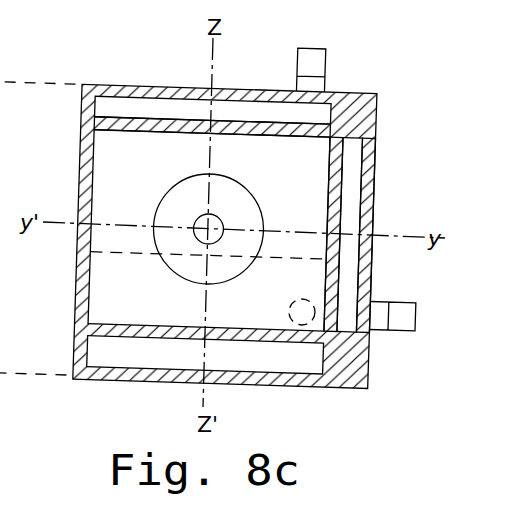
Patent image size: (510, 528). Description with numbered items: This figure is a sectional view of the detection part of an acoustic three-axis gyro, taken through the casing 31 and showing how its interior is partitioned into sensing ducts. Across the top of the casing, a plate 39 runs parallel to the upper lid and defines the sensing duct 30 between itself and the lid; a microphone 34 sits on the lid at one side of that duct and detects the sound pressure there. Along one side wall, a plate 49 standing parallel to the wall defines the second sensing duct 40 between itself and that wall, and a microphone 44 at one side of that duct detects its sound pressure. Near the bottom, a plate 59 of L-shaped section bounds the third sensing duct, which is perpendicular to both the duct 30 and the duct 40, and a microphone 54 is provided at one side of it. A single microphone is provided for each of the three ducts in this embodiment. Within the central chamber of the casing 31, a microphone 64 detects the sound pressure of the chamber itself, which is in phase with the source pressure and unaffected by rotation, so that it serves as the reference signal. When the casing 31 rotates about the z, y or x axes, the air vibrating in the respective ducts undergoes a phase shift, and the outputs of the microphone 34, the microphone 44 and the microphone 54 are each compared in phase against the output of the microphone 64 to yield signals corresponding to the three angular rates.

The sensing duct 30 is at (190, 107).
The casing 31 is at (100, 87).
The microphone 34 is at (327, 60).
The plate 39 is at (134, 135).
The sensing duct 40 is at (356, 202).
The microphone 44 is at (398, 302).
The plate 49 is at (329, 181).
The microphone 54 is at (289, 313).
The plate of L-shaped section 59 is at (120, 323).
The microphone 64 is at (221, 217).